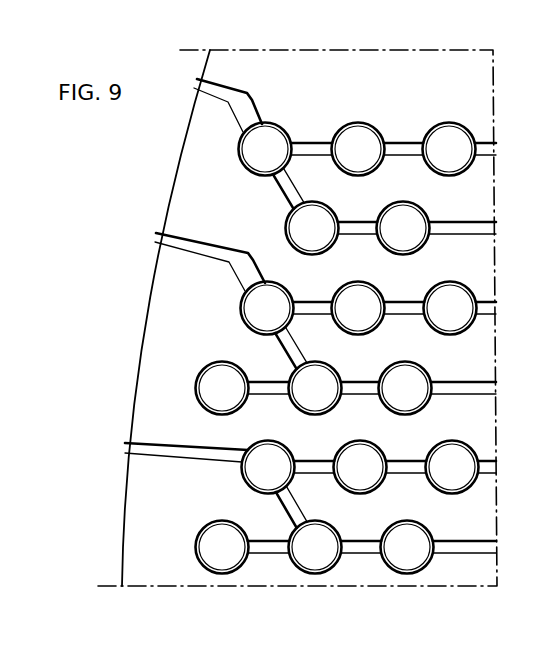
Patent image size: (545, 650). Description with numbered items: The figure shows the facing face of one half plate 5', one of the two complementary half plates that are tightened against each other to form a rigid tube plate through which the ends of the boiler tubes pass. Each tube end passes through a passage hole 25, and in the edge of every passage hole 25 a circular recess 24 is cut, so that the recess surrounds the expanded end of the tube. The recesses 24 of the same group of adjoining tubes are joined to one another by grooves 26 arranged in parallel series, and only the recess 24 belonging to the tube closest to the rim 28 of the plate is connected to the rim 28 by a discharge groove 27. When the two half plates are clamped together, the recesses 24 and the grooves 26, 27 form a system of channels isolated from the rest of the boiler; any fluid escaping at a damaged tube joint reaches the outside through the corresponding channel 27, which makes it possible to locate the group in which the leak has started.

The half plate 5' is at (297, 318).
The circular recesses 24 is at (312, 201).
The passage holes 25 is at (399, 223).
The grooves 26 is at (448, 228).
The grooves 27 is at (213, 89).
The rim 28 is at (137, 333).